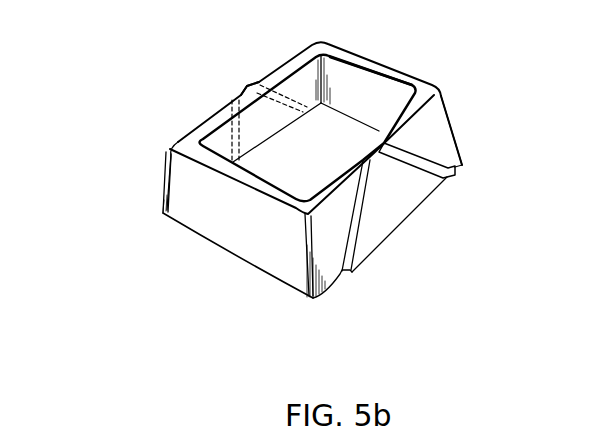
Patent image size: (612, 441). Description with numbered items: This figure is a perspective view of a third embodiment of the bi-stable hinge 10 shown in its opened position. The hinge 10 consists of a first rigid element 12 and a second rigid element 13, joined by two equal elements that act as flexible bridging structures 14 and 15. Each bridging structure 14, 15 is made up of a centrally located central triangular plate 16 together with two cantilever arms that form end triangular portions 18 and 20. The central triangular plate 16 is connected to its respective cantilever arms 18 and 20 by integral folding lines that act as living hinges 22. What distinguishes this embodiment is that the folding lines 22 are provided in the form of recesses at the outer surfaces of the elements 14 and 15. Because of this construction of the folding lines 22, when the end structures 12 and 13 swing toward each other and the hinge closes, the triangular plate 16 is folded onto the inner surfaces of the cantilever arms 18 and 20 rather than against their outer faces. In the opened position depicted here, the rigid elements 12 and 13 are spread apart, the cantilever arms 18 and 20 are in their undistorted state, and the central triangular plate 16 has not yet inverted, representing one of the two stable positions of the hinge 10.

The bi-stable hinge 10 is at (242, 80).
The first rigid element 12 is at (377, 88).
The second rigid element 13 is at (240, 213).
The flexible bridging structure 14 is at (418, 226).
The flexible bridging structure 15 is at (256, 118).
The central triangular plate 16 is at (417, 185).
The cantilever arm 18 is at (335, 232).
The cantilever arm 20 is at (432, 135).
The living hinge 22 is at (425, 163).